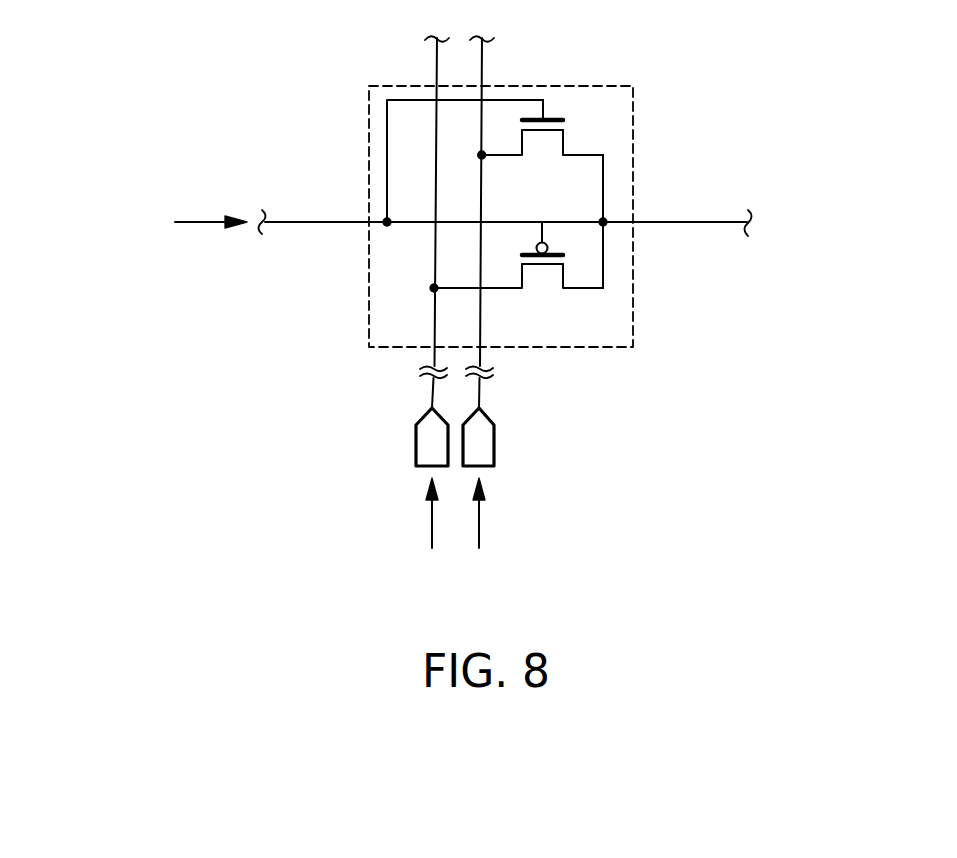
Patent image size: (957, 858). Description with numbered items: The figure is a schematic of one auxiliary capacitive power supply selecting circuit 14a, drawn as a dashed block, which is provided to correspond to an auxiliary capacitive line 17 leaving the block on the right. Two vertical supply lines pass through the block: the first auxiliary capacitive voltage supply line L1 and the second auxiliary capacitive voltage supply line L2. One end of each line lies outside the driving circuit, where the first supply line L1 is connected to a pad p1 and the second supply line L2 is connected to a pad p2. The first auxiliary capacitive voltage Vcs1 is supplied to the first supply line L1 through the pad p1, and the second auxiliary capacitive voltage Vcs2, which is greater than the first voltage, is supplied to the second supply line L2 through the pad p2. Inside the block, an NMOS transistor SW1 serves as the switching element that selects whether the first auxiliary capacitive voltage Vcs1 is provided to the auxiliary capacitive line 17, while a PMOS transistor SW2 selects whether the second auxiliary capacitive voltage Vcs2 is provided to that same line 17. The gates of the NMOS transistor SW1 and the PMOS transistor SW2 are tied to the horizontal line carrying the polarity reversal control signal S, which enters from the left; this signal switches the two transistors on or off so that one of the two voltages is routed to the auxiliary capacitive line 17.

The auxiliary capacitive power supply selecting circuit 14a is at (605, 86).
The polarity reversal control signal S is at (200, 223).
The auxiliary capacitive line 17 is at (705, 222).
The NMOS transistor SW1 is at (541, 150).
The PMOS transistor SW2 is at (541, 283).
The first auxiliary capacitive voltage supply line L1 is at (484, 60).
The second auxiliary capacitive voltage supply line L2 is at (436, 60).
The pad p1 is at (494, 447).
The pad p2 is at (416, 446).
The first auxiliary capacitive voltage Vcs1 is at (481, 523).
The second auxiliary capacitive voltage Vcs2 is at (430, 522).